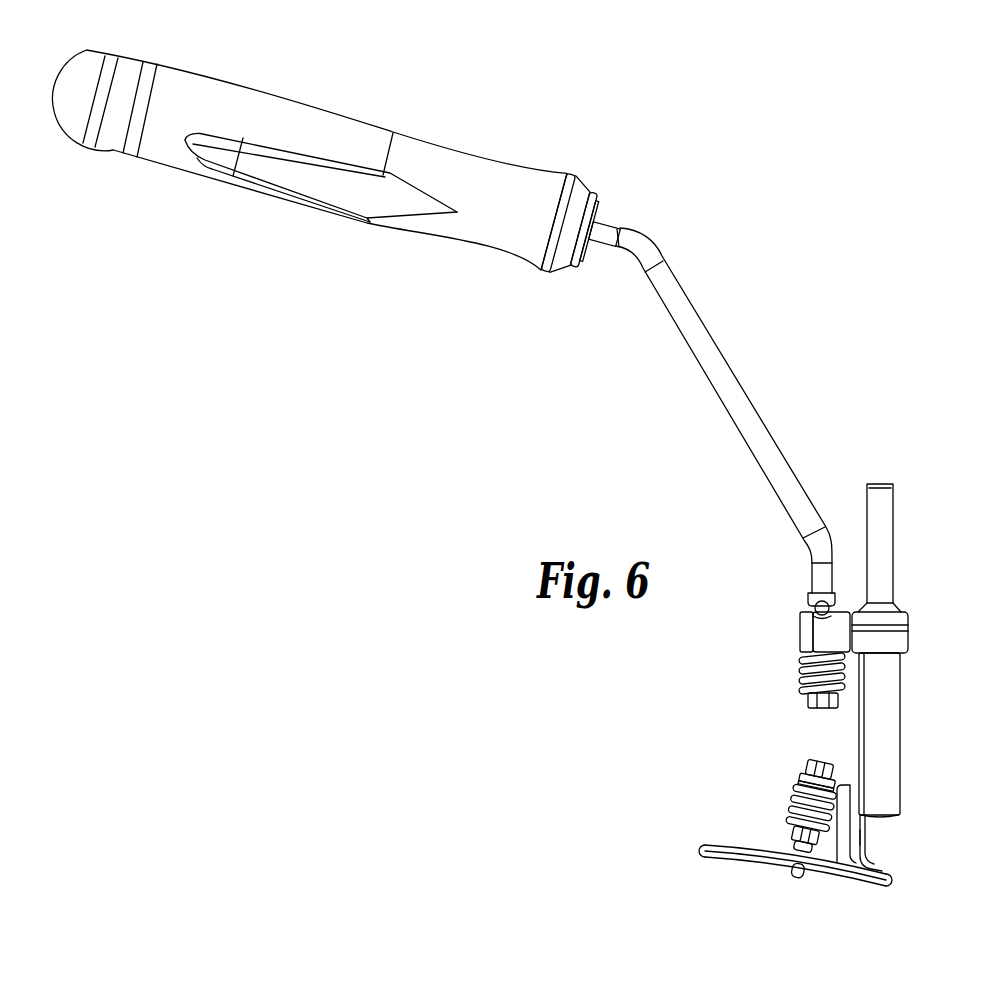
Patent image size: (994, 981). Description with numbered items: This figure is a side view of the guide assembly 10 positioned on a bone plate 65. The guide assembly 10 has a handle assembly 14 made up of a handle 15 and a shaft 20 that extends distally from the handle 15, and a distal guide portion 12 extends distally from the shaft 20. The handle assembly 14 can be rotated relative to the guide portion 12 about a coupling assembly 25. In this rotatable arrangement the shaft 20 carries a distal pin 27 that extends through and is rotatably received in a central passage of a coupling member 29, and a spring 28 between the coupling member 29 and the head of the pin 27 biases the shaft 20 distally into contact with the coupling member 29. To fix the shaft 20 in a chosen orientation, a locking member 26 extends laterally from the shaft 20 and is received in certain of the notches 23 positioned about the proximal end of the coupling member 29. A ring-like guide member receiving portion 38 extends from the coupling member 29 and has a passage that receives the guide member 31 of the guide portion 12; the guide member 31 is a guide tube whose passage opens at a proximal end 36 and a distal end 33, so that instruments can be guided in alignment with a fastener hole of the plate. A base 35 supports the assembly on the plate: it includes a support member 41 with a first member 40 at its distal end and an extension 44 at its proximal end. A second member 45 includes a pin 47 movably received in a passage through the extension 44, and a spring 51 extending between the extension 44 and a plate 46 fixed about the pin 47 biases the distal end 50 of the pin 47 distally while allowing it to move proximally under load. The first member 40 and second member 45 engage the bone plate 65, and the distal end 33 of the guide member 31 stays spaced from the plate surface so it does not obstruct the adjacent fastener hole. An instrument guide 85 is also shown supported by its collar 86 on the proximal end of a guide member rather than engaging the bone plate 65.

The guide assembly 10 is at (451, 375).
The distal guide portion 12 is at (765, 710).
The handle assembly 14 is at (650, 228).
The handle 15 is at (340, 117).
The shaft 20 is at (738, 378).
The notches 23 is at (806, 620).
The coupling assembly 25 is at (798, 598).
The locking member 26 is at (838, 592).
The distal pin 27 is at (823, 710).
The spring 28 is at (798, 670).
The coupling member 29 is at (800, 640).
The guide member 31 is at (903, 722).
The distal end of guide member 33 is at (888, 820).
The base 35 is at (868, 840).
The proximal end of guide member 36 is at (908, 626).
The guide member receiving portion 38 is at (908, 640).
The first member 40 is at (888, 870).
The support member 41 is at (850, 863).
The extension 44 is at (813, 762).
The second member 45 is at (784, 792).
The plate 46 is at (826, 862).
The pin 47 is at (793, 838).
The distal end of pin 50 is at (800, 858).
The spring 51 is at (793, 815).
The bone plate 65 is at (710, 866).
The instrument guide 85 is at (897, 511).
The collar 86 is at (897, 604).